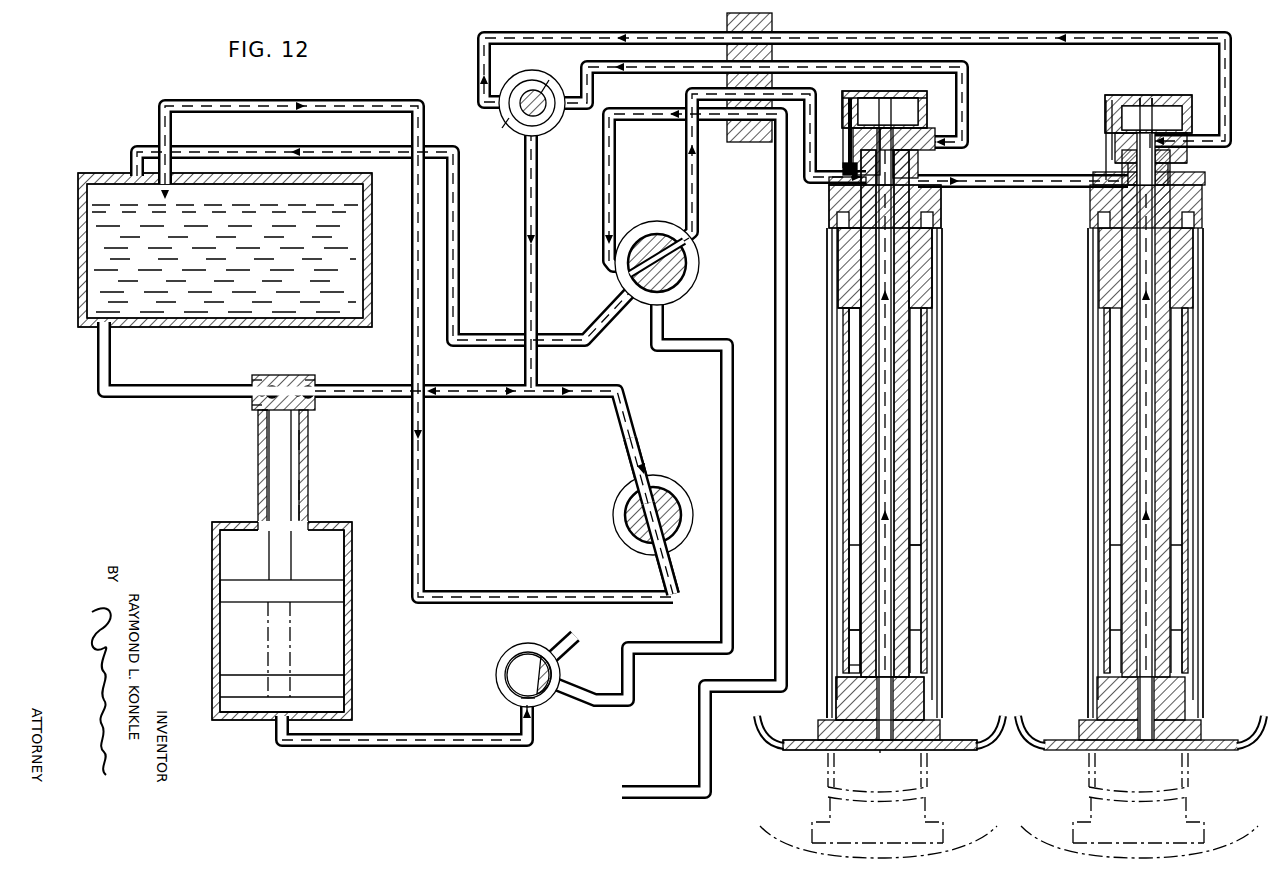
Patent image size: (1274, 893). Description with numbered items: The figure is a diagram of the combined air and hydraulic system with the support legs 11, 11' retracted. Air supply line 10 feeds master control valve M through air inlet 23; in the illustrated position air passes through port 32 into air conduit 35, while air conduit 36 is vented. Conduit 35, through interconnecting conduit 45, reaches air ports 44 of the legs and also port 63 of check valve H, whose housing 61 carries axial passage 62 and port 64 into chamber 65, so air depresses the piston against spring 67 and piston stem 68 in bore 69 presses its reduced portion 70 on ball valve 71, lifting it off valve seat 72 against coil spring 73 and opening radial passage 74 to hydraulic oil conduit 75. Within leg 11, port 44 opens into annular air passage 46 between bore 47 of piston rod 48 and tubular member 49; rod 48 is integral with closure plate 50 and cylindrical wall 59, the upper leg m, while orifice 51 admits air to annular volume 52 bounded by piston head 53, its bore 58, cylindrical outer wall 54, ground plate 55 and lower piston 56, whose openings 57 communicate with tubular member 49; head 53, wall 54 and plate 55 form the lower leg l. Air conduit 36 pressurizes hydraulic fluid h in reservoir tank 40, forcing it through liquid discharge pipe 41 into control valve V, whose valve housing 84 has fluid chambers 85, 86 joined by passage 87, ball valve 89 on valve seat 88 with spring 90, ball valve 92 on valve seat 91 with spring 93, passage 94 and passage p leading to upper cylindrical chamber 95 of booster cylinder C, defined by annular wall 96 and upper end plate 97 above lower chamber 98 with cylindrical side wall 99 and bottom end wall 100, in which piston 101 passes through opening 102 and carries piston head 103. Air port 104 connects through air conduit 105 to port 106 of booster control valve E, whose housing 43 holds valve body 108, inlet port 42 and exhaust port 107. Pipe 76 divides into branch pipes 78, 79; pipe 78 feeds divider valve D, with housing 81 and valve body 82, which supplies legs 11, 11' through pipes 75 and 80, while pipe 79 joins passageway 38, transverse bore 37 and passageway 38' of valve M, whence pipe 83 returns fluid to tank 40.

The air supply line 10 is at (602, 193).
The support leg 11 is at (880, 478).
The support leg 11' is at (1141, 478).
The air inlet 23 is at (618, 280).
The air port 32 is at (700, 243).
The air conduit 35 is at (702, 193).
The air conduit 36 is at (268, 152).
The transverse bore 37 is at (626, 530).
The passageway 38 is at (623, 470).
The passageway 38' is at (679, 548).
The reservoir tank 40 is at (78, 276).
The liquid discharge pipe 41 is at (98, 366).
The port 42 is at (568, 685).
The housing 43 is at (540, 710).
The air port 44 is at (829, 190).
The interconnecting conduit 45 is at (1003, 189).
The annular air passage 46 is at (840, 258).
The bore 47 is at (900, 345).
The piston rod 48 is at (910, 385).
The tubular member 49 is at (830, 408).
The closure plate 50 is at (941, 226).
The orifice 51 is at (850, 655).
The annular volume 52 is at (848, 582).
The piston head 53 is at (930, 280).
The cylindrical outer wall 54 is at (848, 360).
The ground plate 55 is at (798, 752).
The lower piston 56 is at (925, 680).
The openings 57 is at (905, 750).
The bore 58 is at (840, 300).
The cylindrical wall 59 is at (932, 545).
The valve housing 61 is at (852, 145).
The axial passage 62 is at (848, 112).
The port 63 is at (843, 166).
The port 64 is at (905, 112).
The chamber 65 is at (894, 94).
The spring 67 is at (938, 138).
The piston stem 68 is at (1110, 140).
The bore 69 is at (842, 104).
The reduced portion 70 is at (1188, 158).
The ball valve 71 is at (1170, 168).
The valve seat 72 is at (920, 162).
The coil spring 73 is at (1168, 180).
The radial passage 74 is at (1195, 140).
The hydraulic oil conduit 75 is at (626, 73).
The pipe 76 is at (356, 397).
The branch pipe 78 is at (524, 232).
The branch pipe 79 is at (620, 415).
The pipe 80 is at (1035, 39).
The housing 81 is at (502, 128).
The valve body 82 is at (541, 85).
The pipe 83 is at (232, 106).
The valve housing 84 is at (298, 388).
The fluid chamber 85 is at (264, 410).
The fluid chamber 86 is at (315, 380).
The passage 87 is at (270, 386).
The valve seat 88 is at (252, 380).
The ball valve 89 is at (252, 404).
The spring 90 is at (262, 388).
The valve seat 91 is at (310, 386).
The ball valve 92 is at (294, 420).
The spring 93 is at (310, 414).
The passage 94 is at (300, 445).
The upper cylindrical chamber 95 is at (308, 488).
The annular wall 96 is at (308, 512).
The upper end plate 97 is at (240, 522).
The lower chamber 98 is at (330, 624).
The cylindrical side wall 99 is at (346, 560).
The bottom end wall 100 is at (248, 718).
The piston 101 is at (268, 548).
The opening 102 is at (222, 531).
The piston head 103 is at (225, 590).
The air port 104 is at (276, 745).
The air conduit 105 is at (412, 747).
The port 106 is at (521, 705).
The exhaust port 107 is at (556, 650).
The valve body 108 is at (516, 680).
The control valve V is at (290, 374).
The booster cylinder C is at (214, 524).
The divider valve D is at (552, 136).
The booster control valve E is at (494, 660).
The check valve H is at (932, 108).
The master control valve M is at (700, 263).
The hydraulic fluid h is at (187, 270).
The passage p is at (258, 430).
The upper leg m is at (945, 505).
The lower leg l is at (932, 712).